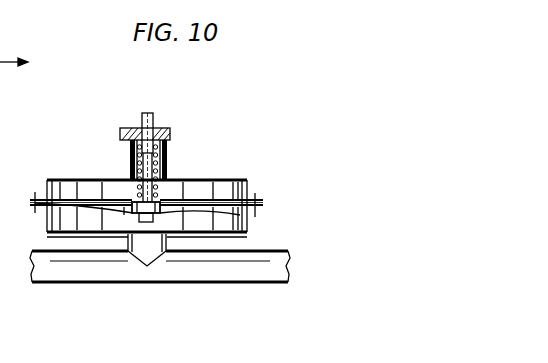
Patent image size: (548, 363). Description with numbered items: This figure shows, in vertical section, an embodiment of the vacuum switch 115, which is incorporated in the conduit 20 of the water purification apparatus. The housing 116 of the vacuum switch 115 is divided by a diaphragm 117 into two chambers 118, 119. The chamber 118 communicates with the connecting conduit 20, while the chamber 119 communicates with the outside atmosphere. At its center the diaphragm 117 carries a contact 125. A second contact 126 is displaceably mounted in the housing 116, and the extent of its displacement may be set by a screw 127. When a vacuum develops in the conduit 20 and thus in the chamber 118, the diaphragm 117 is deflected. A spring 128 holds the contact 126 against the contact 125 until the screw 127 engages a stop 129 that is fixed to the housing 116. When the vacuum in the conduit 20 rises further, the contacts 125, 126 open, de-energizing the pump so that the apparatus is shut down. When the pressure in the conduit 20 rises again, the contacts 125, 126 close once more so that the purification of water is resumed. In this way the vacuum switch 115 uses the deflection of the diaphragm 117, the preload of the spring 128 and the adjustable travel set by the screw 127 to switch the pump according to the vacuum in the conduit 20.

The vacuum switch 115 is at (86, 134).
The housing 116 is at (250, 186).
The diaphragm 117 is at (238, 215).
The chamber 118 is at (55, 222).
The chamber 119 is at (53, 190).
The contact 125 is at (124, 210).
The second contact 126 is at (136, 204).
The screw 127 is at (152, 129).
The spring 128 is at (158, 190).
The stop 129 is at (167, 152).
The conduit 20 is at (250, 273).